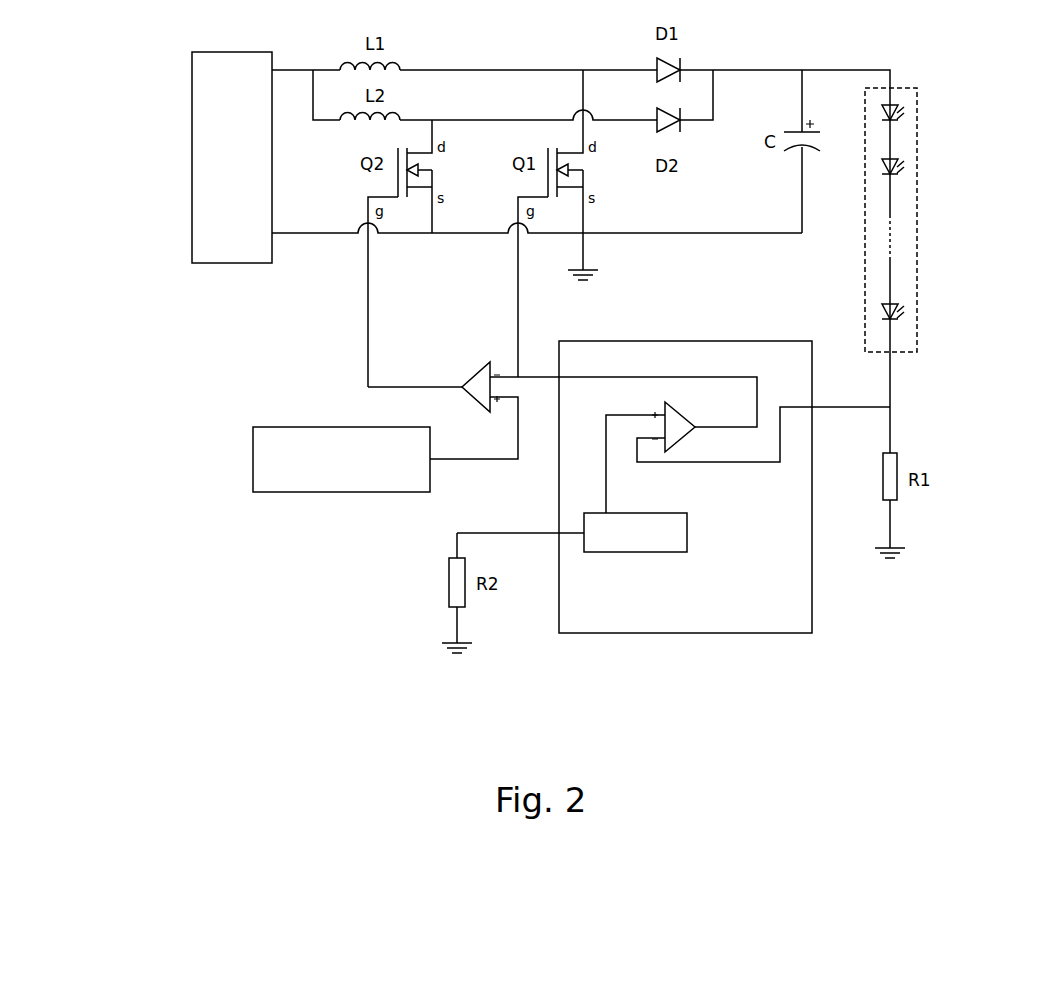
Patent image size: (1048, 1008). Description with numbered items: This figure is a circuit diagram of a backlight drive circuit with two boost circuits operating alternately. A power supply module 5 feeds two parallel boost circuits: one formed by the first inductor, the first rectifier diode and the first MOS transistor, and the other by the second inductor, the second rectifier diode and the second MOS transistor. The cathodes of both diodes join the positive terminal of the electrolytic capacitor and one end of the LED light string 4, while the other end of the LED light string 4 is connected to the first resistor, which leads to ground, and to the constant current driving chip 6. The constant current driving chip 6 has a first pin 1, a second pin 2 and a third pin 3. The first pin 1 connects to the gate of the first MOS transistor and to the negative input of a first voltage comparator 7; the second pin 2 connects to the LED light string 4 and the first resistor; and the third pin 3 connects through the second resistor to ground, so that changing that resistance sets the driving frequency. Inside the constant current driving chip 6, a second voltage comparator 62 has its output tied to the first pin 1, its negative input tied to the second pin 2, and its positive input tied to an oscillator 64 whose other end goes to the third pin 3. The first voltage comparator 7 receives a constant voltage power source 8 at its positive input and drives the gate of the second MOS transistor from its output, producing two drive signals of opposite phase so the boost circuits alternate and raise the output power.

The first pin 1 is at (524, 365).
The second pin 2 is at (851, 394).
The third pin 3 is at (508, 521).
The LED light string 4 is at (917, 220).
The power supply module 5 is at (190, 157).
The constant current driving chip 6 is at (691, 489).
The first voltage comparator 7 is at (477, 370).
The constant voltage power source 8 is at (345, 427).
The second voltage comparator 62 is at (683, 410).
The oscillator 64 is at (620, 552).